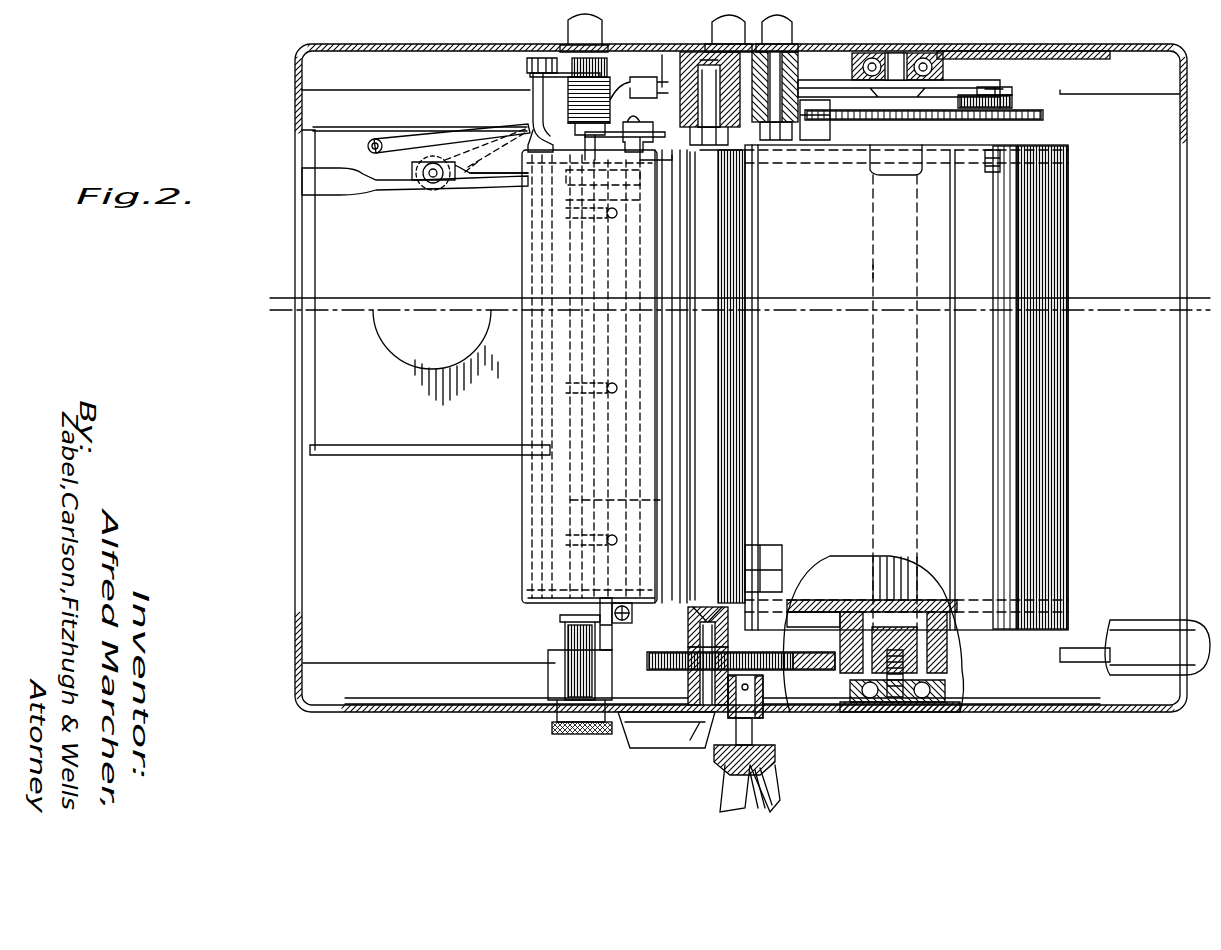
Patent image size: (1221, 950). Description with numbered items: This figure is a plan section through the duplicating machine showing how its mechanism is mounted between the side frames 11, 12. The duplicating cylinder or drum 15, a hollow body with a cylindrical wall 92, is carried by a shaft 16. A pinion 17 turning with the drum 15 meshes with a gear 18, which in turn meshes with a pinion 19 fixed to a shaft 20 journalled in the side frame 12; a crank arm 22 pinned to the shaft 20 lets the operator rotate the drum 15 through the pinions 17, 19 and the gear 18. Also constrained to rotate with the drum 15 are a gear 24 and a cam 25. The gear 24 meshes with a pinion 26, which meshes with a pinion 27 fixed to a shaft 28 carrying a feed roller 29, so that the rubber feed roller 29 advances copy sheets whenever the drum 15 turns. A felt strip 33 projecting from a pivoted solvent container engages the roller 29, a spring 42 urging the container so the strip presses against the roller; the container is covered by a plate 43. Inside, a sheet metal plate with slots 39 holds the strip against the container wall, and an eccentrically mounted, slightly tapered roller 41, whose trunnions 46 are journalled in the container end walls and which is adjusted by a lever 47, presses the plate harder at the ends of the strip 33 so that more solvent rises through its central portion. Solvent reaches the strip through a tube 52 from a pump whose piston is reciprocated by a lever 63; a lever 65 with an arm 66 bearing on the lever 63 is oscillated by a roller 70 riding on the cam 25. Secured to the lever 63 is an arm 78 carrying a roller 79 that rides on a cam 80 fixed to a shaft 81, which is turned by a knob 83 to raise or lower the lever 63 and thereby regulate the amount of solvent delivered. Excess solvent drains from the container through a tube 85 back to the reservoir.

The side frame 11 is at (1078, 55).
The side frame 12 is at (830, 708).
The duplicating cylinder or drum 15 is at (1070, 215).
The shaft 16 is at (890, 274).
The pinion 17 is at (960, 668).
The gear 18 is at (775, 665).
The pinion 19 is at (762, 656).
The shaft 20 is at (690, 740).
The crank arm 22 is at (775, 750).
The gear 24 is at (1045, 115).
The cam 25 is at (1014, 98).
The pinion 26 is at (805, 148).
The pinion 27 is at (755, 148).
The shaft 28 is at (714, 142).
The feed roller 29 is at (712, 473).
The felt strip 33 is at (688, 432).
The slots 39 is at (613, 220).
The eccentrically mounted roller 41 is at (665, 500).
The spring 42 is at (530, 65).
The plate 43 is at (522, 536).
The trunnions 46 is at (630, 617).
The lever 47 is at (613, 635).
The tube 52 is at (478, 158).
The lever 63 is at (494, 182).
The lever 65 is at (818, 82).
The arm 66 is at (640, 80).
The roller 70 is at (966, 95).
The arm 78 is at (516, 180).
The roller 79 is at (640, 122).
The cam 80 is at (668, 135).
The shaft 81 is at (685, 638).
The knob 83 is at (640, 740).
The tube 85 is at (443, 138).
The cylindrical wall 92 is at (1055, 528).